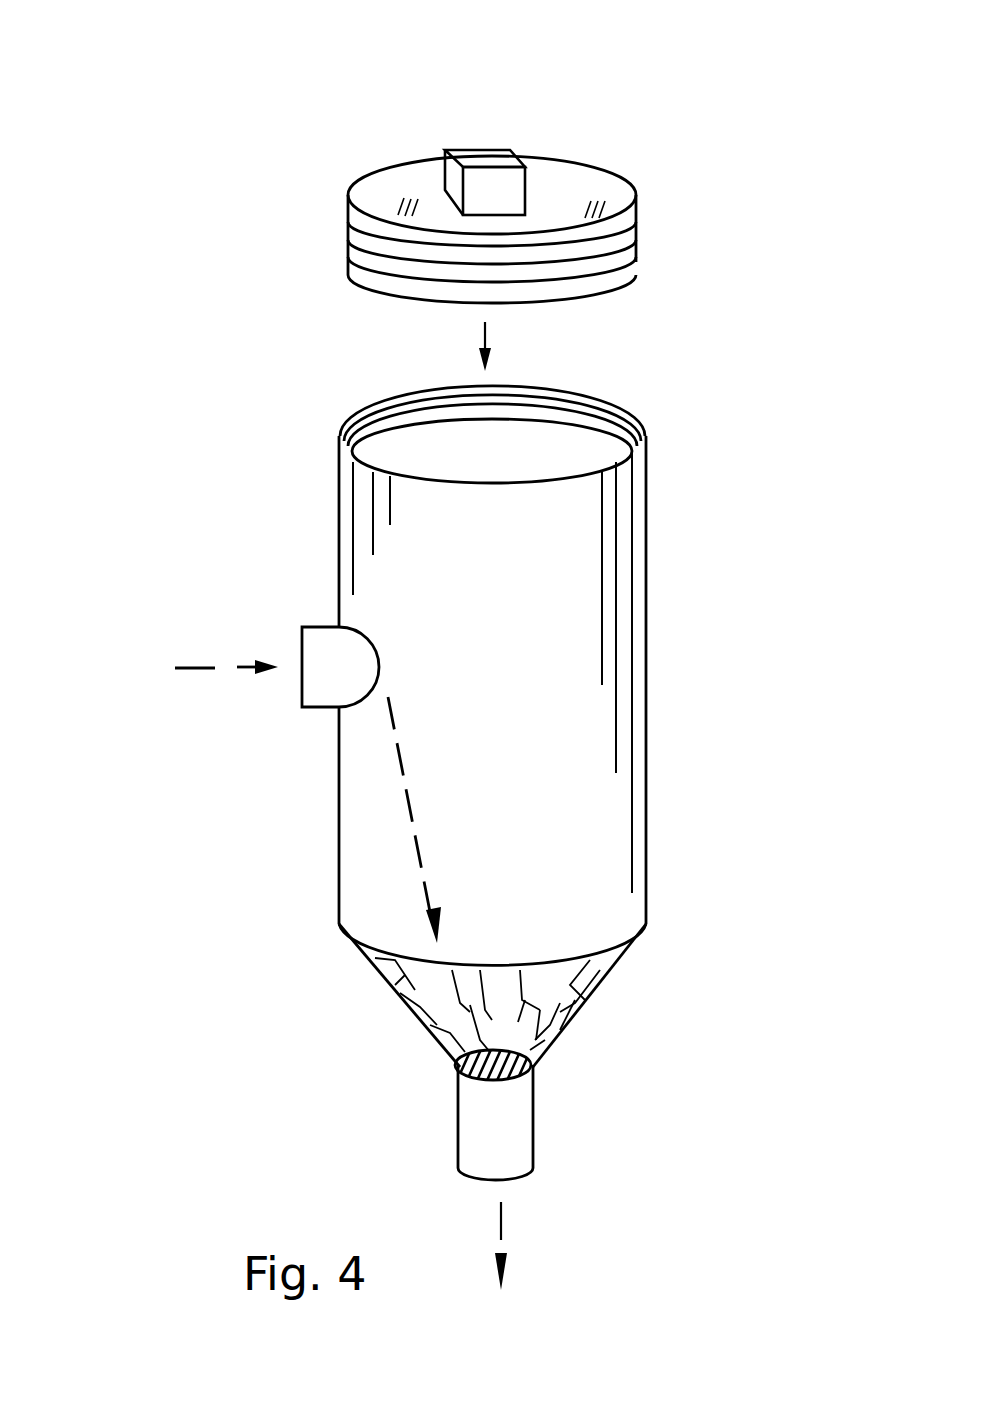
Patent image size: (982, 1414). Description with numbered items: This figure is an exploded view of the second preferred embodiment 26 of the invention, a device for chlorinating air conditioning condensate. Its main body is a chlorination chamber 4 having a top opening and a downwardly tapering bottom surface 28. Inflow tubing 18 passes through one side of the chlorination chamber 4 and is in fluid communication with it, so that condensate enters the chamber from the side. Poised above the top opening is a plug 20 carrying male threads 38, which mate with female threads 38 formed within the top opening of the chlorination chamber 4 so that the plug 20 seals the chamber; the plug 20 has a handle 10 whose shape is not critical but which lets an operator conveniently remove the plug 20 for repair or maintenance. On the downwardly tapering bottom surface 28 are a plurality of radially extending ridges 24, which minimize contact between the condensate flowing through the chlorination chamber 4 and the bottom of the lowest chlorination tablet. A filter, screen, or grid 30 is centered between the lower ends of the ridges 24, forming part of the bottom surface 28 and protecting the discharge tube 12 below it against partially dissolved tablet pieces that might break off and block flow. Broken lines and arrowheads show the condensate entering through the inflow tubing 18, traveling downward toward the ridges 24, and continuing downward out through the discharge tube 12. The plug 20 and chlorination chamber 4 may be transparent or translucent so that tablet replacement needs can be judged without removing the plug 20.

The second preferred embodiment 26 is at (255, 232).
The handle 10 is at (486, 175).
The plug 20 is at (565, 193).
The threads 38 is at (637, 221).
The chlorination chamber 4 is at (613, 589).
The inflow tubing 18 is at (322, 688).
The downwardly tapering bottom surface 28 is at (380, 972).
The radially extending ridges 24 is at (530, 983).
The filter, screen, or grid 30 is at (530, 1067).
The discharge tube 12 is at (500, 1130).